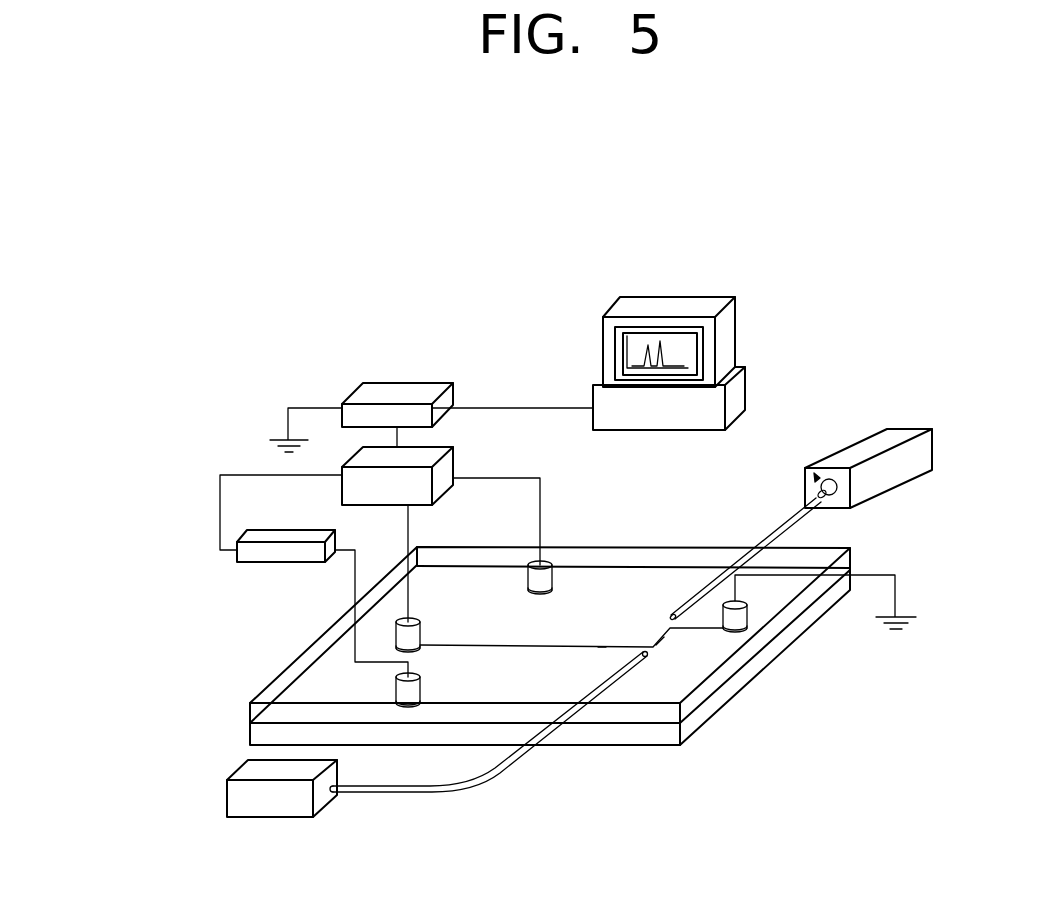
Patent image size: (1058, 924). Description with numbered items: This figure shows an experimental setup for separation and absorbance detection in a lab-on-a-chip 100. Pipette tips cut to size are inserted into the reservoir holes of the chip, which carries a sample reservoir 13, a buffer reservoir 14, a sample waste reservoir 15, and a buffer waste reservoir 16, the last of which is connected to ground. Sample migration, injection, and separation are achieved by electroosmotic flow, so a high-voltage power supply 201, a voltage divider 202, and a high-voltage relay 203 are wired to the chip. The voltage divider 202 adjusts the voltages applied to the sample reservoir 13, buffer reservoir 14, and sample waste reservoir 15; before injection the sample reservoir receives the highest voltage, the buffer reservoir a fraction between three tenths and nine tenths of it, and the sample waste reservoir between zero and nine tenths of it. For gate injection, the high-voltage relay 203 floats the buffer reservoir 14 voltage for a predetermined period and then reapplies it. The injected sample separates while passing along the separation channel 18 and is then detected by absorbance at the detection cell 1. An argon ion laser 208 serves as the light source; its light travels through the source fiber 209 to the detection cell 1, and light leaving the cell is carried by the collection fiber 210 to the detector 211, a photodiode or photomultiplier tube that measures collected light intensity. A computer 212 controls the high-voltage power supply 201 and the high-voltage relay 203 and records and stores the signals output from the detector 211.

The detection cell 1 is at (660, 640).
The sample reservoir 13 is at (422, 628).
The buffer reservoir 14 is at (422, 693).
The sample waste reservoir 15 is at (553, 568).
The buffer waste reservoir 16 is at (747, 625).
The separation channel 18 is at (600, 647).
The lab-on-a-chip 100 is at (273, 687).
The high-voltage power supply 201 is at (398, 387).
The voltage divider 202 is at (450, 462).
The high-voltage relay 203 is at (237, 548).
The argon ion laser 208 is at (278, 808).
The source fiber 209 is at (500, 772).
The collection fiber 210 is at (767, 530).
The detector 211 is at (913, 428).
The computer 212 is at (733, 328).